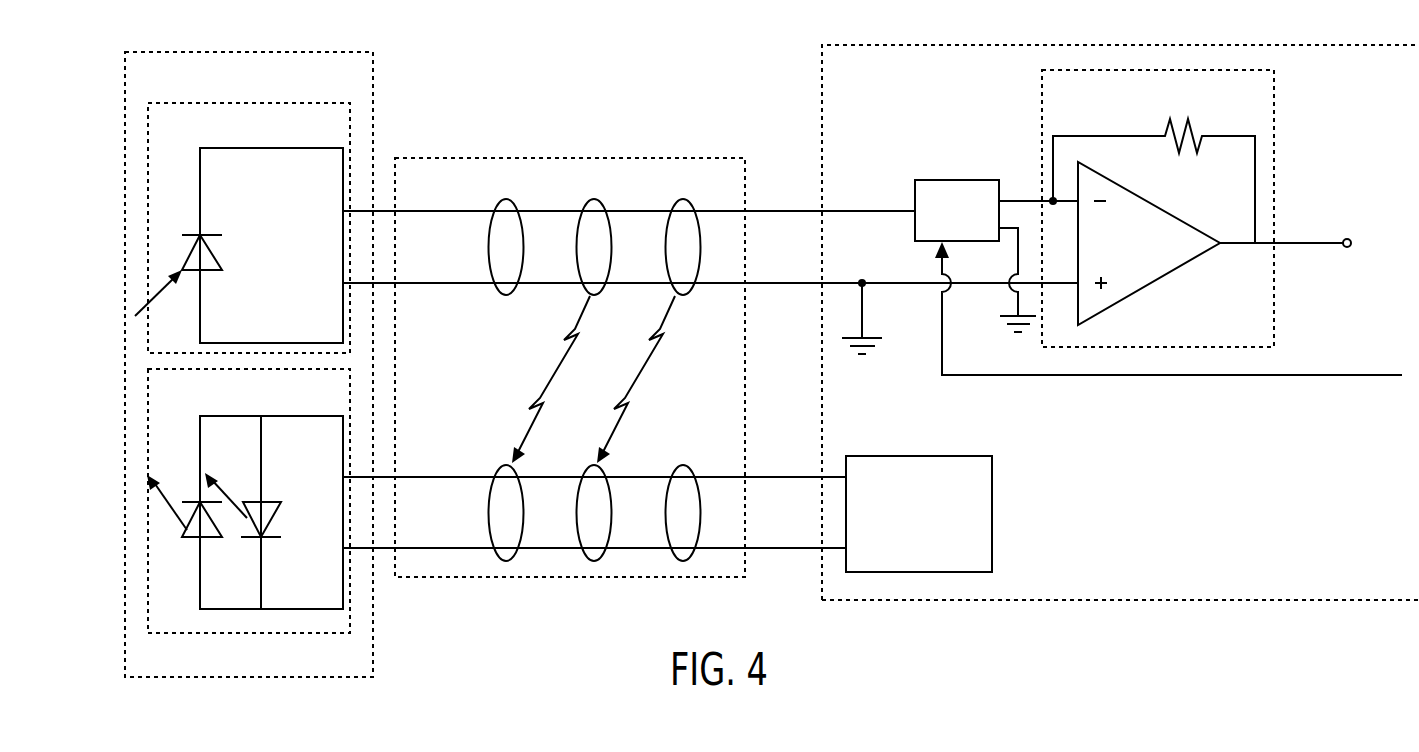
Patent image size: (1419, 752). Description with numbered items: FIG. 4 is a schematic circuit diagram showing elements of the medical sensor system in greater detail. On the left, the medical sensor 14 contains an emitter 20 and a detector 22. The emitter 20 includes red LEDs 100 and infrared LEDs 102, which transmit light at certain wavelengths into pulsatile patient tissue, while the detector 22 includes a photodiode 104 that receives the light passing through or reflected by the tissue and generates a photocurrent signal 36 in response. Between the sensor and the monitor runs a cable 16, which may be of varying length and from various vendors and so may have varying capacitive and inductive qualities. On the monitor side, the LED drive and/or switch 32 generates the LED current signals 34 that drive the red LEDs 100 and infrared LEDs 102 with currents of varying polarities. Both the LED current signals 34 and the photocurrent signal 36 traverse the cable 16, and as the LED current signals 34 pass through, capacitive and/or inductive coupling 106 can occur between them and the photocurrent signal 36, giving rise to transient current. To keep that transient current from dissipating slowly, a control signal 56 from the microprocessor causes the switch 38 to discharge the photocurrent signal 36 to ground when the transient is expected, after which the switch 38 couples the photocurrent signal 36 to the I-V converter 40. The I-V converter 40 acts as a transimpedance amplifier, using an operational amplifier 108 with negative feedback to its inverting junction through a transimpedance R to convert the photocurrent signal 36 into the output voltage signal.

The medical sensor 14 is at (233, 52).
The detector 22 is at (287, 103).
The emitter 20 is at (247, 634).
The photodiode 104 is at (214, 263).
The red LEDs 100 is at (277, 502).
The infrared (IR) LEDs 102 is at (206, 540).
The cable 16 is at (655, 158).
The photocurrent signal 36 is at (508, 198).
The LED current signals 34 is at (685, 465).
The capacitive and/or inductive coupling 106 is at (573, 342).
The switch 38 is at (940, 180).
The I-V converter 40 is at (1275, 98).
The operational amplifier 108 is at (1165, 212).
The control signal 56 is at (1272, 375).
The LED drive and/or switch 32 is at (917, 456).